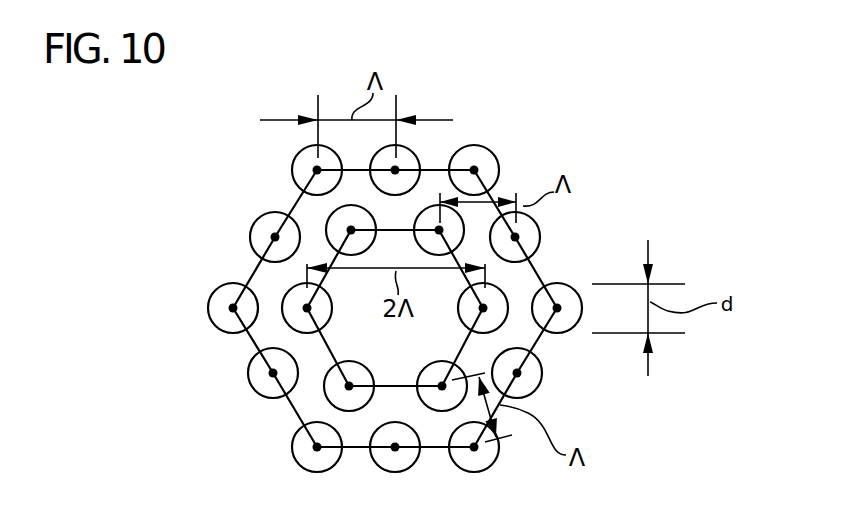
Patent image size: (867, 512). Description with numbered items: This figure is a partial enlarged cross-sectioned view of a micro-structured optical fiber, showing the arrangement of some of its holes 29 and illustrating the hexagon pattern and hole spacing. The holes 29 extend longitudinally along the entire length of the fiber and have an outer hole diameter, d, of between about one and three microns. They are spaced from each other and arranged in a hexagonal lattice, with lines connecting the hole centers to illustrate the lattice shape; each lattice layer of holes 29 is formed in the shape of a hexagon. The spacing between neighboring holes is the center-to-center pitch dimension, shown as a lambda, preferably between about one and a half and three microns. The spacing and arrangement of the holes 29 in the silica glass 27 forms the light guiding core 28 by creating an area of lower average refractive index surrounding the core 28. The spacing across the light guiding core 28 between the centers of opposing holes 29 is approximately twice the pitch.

The silica glass 27 is at (456, 138).
The light guiding core 28 is at (352, 328).
The holes 29 is at (292, 286).